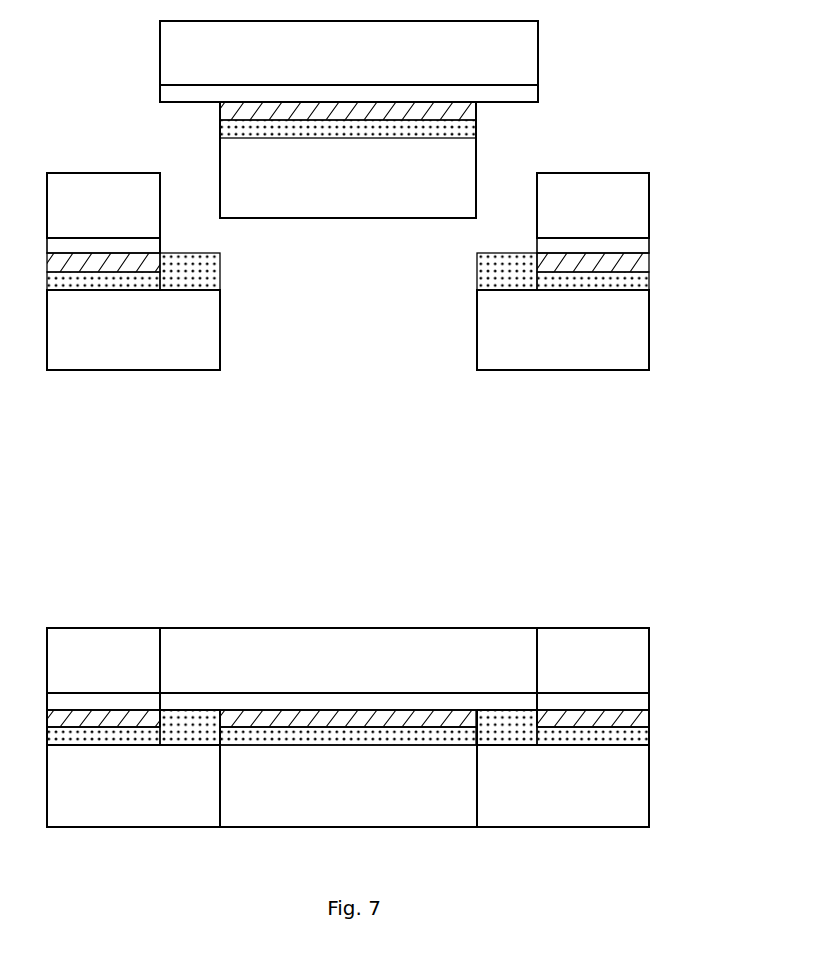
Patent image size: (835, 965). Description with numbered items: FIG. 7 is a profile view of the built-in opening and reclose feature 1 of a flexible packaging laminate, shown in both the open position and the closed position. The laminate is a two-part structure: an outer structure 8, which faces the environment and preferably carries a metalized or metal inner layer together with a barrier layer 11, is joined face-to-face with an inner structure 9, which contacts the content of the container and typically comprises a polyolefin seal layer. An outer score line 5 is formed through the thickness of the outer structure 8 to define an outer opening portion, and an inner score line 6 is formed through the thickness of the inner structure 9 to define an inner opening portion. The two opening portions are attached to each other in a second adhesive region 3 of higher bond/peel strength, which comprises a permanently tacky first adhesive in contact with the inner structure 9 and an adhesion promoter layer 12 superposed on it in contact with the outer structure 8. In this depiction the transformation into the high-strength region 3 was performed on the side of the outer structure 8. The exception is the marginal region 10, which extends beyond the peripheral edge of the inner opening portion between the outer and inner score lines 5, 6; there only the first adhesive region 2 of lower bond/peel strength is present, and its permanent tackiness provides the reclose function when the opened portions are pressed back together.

The built-in opening and reclose feature 1 is at (446, 549).
The first adhesive region 2 is at (219, 292).
The second adhesive region 3 is at (220, 139).
The scoring line of the outer structure 5 is at (162, 221).
The scoring line of the inner structure 6 is at (220, 341).
The outer structure of the laminate 8 is at (633, 211).
The inner structure of the laminate 9 is at (633, 332).
The marginal region 10 is at (515, 103).
The barrier layer 11 is at (633, 246).
The adhesion promoter layer 12 is at (472, 111).